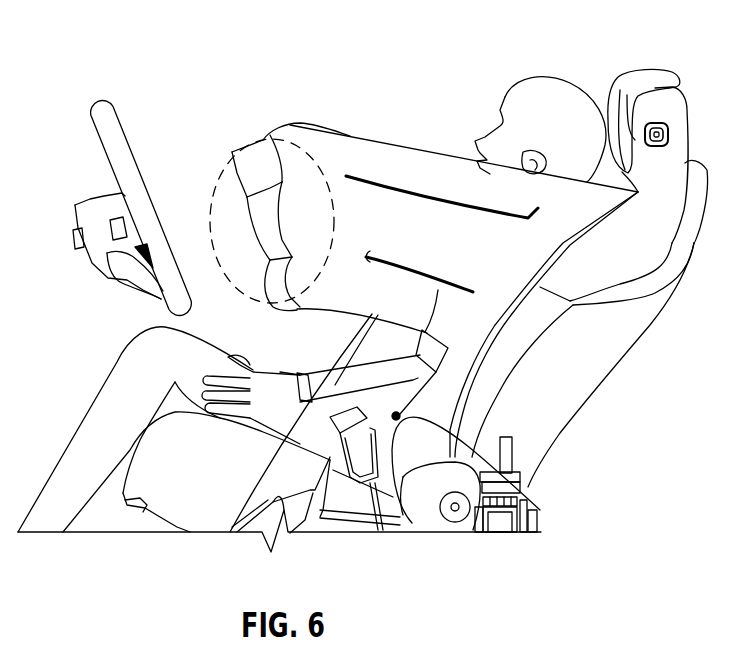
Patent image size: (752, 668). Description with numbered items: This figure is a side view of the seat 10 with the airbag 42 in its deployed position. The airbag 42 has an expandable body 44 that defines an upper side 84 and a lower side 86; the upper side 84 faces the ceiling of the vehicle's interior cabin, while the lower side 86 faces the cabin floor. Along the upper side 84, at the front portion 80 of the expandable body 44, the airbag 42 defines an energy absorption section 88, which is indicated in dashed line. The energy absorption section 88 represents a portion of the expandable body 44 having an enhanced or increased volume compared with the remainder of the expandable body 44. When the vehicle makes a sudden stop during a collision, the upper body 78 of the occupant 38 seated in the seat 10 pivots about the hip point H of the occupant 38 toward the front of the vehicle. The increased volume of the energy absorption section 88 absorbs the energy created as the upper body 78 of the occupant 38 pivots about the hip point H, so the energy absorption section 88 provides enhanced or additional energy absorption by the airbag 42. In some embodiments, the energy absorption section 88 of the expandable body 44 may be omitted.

The seat 10 is at (643, 346).
The occupant 38 is at (551, 102).
The airbag 42 is at (410, 173).
The expandable body 44 is at (467, 262).
The upper body 78 is at (334, 317).
The front portion 80 is at (262, 162).
The upper side 84 is at (348, 134).
The lower side 86 is at (230, 532).
The energy absorption section 88 is at (232, 148).
The hip point H is at (533, 494).